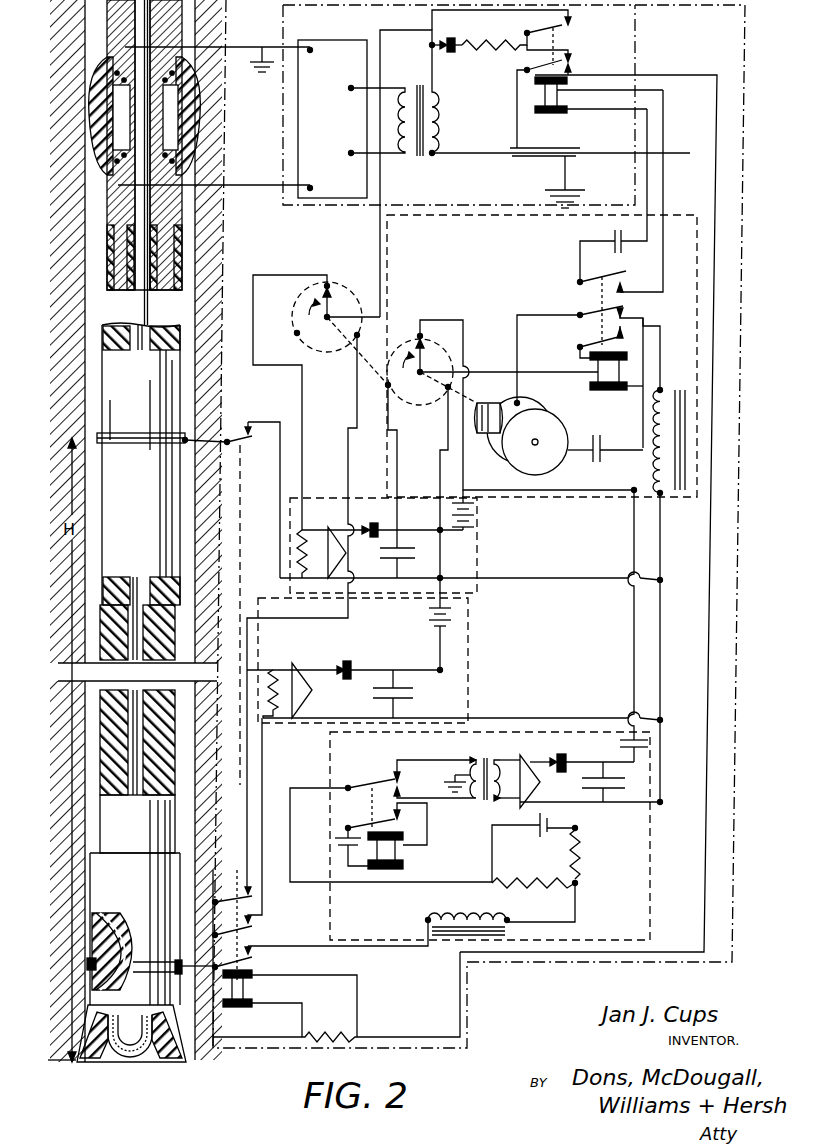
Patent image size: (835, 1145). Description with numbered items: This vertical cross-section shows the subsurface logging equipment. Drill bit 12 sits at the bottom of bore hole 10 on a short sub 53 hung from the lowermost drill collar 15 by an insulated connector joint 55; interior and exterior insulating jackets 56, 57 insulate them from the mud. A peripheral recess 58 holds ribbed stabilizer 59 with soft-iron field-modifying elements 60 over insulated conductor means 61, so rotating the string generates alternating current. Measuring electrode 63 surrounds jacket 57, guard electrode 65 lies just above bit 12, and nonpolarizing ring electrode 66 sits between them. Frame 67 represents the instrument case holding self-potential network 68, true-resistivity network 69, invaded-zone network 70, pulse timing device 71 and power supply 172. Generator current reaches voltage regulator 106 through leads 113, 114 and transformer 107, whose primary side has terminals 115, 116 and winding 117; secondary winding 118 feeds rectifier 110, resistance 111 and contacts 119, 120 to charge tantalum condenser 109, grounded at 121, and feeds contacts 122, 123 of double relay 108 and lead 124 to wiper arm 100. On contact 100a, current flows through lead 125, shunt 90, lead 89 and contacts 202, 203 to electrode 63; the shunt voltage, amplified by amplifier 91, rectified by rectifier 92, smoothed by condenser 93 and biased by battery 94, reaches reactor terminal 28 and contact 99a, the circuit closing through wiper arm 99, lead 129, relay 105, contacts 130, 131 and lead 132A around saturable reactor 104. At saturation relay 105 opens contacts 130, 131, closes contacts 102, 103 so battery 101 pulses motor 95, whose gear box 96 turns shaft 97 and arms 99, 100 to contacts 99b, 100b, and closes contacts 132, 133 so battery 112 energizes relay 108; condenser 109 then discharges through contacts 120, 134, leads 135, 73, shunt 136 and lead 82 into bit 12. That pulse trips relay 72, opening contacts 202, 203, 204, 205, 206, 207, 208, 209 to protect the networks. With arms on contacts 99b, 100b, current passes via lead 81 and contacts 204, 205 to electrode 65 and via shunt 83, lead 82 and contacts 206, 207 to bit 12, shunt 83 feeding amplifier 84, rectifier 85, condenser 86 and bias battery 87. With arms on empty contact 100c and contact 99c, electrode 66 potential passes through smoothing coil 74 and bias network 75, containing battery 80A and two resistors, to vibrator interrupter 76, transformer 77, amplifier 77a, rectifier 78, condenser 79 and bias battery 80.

The borehole 10 is at (85, 782).
The drill bit 12 is at (95, 1010).
The drill collar section 15 is at (100, 700).
The lead wire 28 is at (664, 500).
The passage 53 is at (100, 982).
The valve body 55 is at (110, 935).
The drill pipe section 56 is at (100, 622).
The drill pipe joint 57 is at (102, 595).
The inner conductor 58 is at (178, 55).
The packer element 59 is at (195, 118).
The packer chamber 60 is at (196, 138).
The sealing ring 61 is at (186, 158).
The collar 63 is at (98, 436).
The tool housing 65 is at (108, 895).
The valve seat 66 is at (92, 962).
The surface equipment enclosure 67 is at (703, 7).
The Esp network 68 is at (648, 840).
The Rt network 69 is at (468, 672).
The Ri network 70 is at (477, 556).
The control circuit 71 is at (447, 218).
The relay 72 is at (236, 990).
The conductor 73 is at (460, 986).
The coil 74 is at (462, 914).
The resistor 1300 ohm 75 is at (573, 855).
The switch 76 is at (375, 783).
The transformer 77 is at (493, 760).
The amplifier 77a is at (534, 765).
The rectifier 78 is at (592, 756).
The capacitor 79 is at (582, 781).
The capacitor 80 is at (650, 746).
The battery 80A is at (541, 836).
The conductor 81 is at (349, 447).
The conductor 82 is at (290, 796).
The resistor 83 is at (274, 668).
The amplifier 84 is at (313, 690).
The rectifier 85 is at (352, 665).
The capacitor 86 is at (414, 693).
The battery 87 is at (453, 620).
The conductor 89 is at (280, 462).
The resistor 90 is at (470, 555).
The amplifier 91 is at (331, 559).
The rectifier 92 is at (379, 526).
The capacitor 93 is at (380, 556).
The battery 94 is at (477, 513).
The motor 95 is at (553, 430).
The gear 96 is at (478, 425).
The mechanical linkage 97 is at (466, 400).
The rotary switch 99 is at (452, 372).
The switch contact 99a is at (527, 406).
The switch contact 99b is at (437, 481).
The switch contact 99c is at (401, 449).
The rotary switch 100 is at (336, 317).
The switch contact 100a is at (344, 279).
The switch contact 100b is at (359, 351).
The switch contact 100c is at (312, 333).
The capacitor 101 is at (601, 458).
The switch 102 is at (570, 354).
The switch contact 103 is at (623, 311).
The solenoid coil 104 is at (668, 428).
The relay 105 is at (613, 372).
The power supply 106 is at (332, 119).
The transformer core 107 is at (440, 110).
The relay 108 is at (553, 100).
The capacitor 109 is at (556, 151).
The rectifier 110 is at (451, 53).
The resistor 111 is at (493, 40).
The capacitor 112 is at (612, 236).
The ground conductor 113 is at (196, 62).
The conductor 114 is at (240, 185).
The transformer terminal 115 is at (393, 90).
The transformer terminal 116 is at (404, 156).
The primary winding 117 is at (404, 122).
The secondary winding 118 is at (440, 120).
The switch contact 119 is at (571, 50).
The switch 120 is at (538, 66).
The ground 121 is at (574, 194).
The switch contact 122 is at (573, 21).
The switch 123 is at (544, 36).
The conductor 124 is at (380, 243).
The conductor 125 is at (289, 275).
The conductor 129 is at (527, 373).
The switch 130 is at (605, 340).
The switch contact 131 is at (634, 334).
The switch 132 is at (590, 280).
The conductor 132A is at (668, 326).
The switch contact 133 is at (624, 273).
The switch contact 134 is at (587, 65).
The conductor 135 is at (715, 184).
The resistor 136 is at (325, 1036).
The conductor 172 is at (405, 206).
The switch contact 202 is at (263, 492).
The switch 203 is at (250, 610).
The switch contact 204 is at (252, 893).
The switch 205 is at (252, 902).
The switch contact 206 is at (253, 919).
The switch 207 is at (252, 932).
The switch contact 208 is at (253, 950).
The switch 209 is at (252, 960).